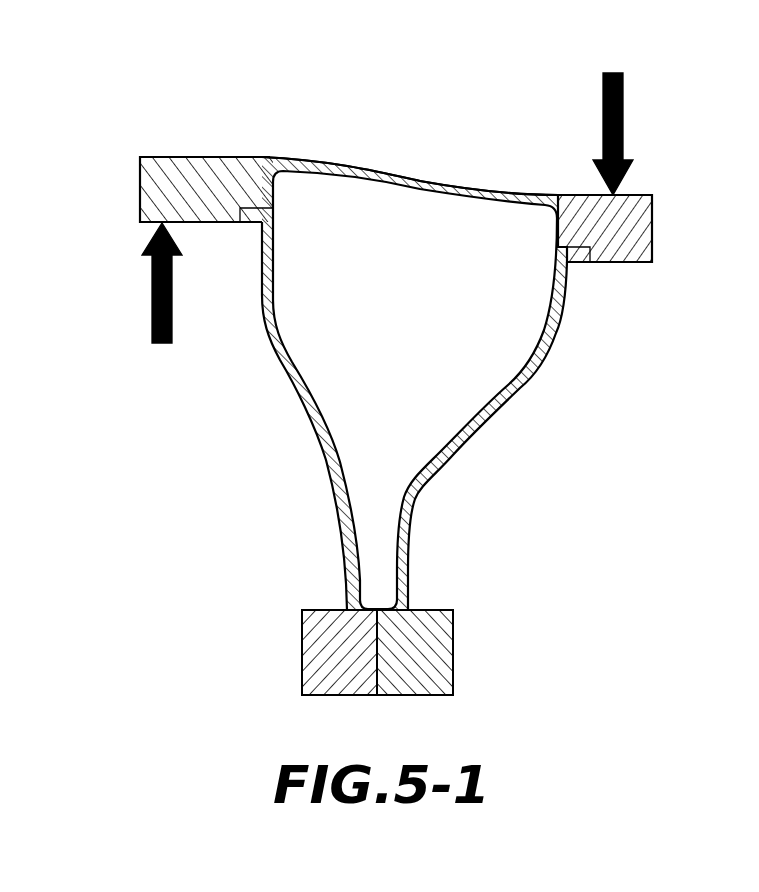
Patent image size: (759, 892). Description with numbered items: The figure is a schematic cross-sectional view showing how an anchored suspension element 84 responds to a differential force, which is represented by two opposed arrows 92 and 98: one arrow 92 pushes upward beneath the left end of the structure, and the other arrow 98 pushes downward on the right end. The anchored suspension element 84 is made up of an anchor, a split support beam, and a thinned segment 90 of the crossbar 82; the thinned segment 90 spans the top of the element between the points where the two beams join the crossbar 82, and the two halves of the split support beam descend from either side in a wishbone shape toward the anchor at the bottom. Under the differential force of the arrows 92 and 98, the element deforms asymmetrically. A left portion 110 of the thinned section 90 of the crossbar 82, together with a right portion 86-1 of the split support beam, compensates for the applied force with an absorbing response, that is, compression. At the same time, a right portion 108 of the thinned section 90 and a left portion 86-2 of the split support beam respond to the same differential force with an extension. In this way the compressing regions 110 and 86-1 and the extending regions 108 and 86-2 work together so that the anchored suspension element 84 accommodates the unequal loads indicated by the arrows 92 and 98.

The crossbar 82 is at (646, 218).
The anchored suspension element 84 is at (663, 243).
The right portion of the split support beam 86-1 is at (476, 424).
The left portion of the split support beam 86-2 is at (322, 436).
The thinned segment 90 is at (422, 184).
The arrow 92 is at (162, 343).
The arrow 98 is at (613, 73).
The right portion of the thinned section 108 is at (478, 190).
The left portion of the thinned section 110 is at (326, 161).